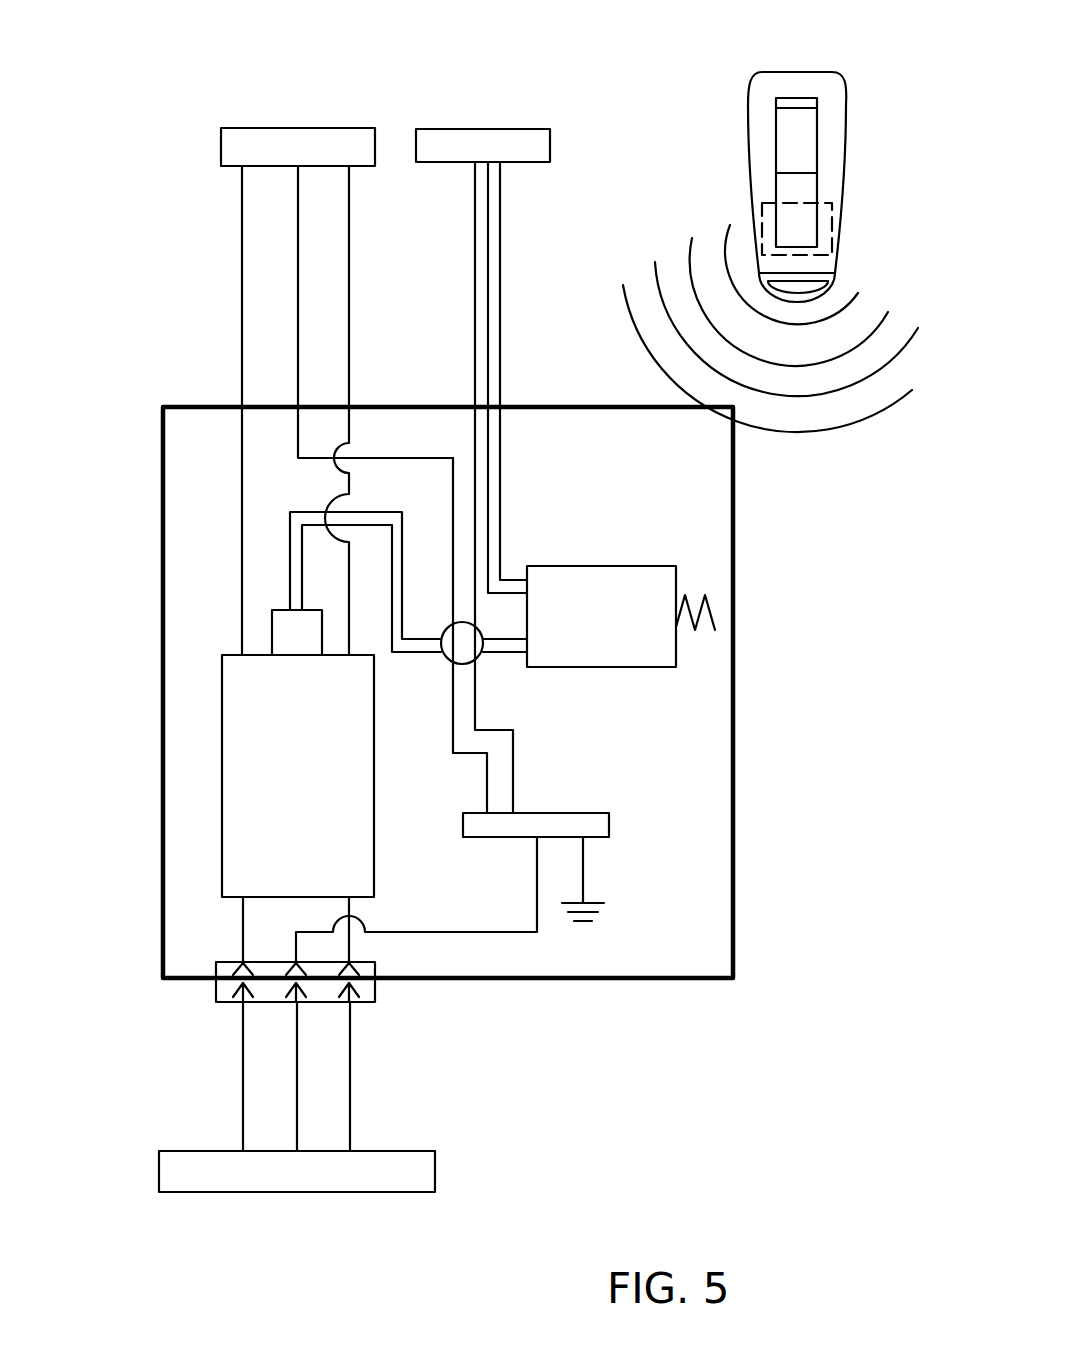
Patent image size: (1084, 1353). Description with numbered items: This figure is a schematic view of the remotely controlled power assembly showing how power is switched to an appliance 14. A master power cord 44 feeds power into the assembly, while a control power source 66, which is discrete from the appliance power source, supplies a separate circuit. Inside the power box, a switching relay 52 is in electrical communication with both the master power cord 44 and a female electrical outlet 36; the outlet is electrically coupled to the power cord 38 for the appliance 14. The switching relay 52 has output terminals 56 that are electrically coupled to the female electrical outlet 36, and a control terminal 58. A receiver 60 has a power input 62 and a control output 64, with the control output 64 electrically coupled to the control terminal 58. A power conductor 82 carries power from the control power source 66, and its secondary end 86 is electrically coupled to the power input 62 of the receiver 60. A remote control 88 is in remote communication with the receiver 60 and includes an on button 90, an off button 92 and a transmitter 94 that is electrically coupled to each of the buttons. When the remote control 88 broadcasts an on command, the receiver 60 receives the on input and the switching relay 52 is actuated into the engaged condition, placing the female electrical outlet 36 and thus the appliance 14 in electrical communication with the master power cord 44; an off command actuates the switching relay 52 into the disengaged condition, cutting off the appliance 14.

The appliance 14 is at (433, 1173).
The female electrical outlet 36 is at (372, 1003).
The power cord 38 is at (242, 1068).
The master power cord 44 is at (221, 128).
The switching relay 52 is at (221, 786).
The output terminals 56 is at (347, 655).
The control terminal 58 is at (283, 610).
The receiver 60 is at (630, 566).
The power input 62 is at (522, 580).
The control output 64 is at (523, 648).
The control power source 66 is at (547, 133).
The power conductor 82 is at (473, 302).
The secondary end 86 is at (527, 593).
The remote control 88 is at (793, 72).
The on button 90 is at (818, 133).
The off button 92 is at (773, 189).
The transmitter 94 is at (833, 202).